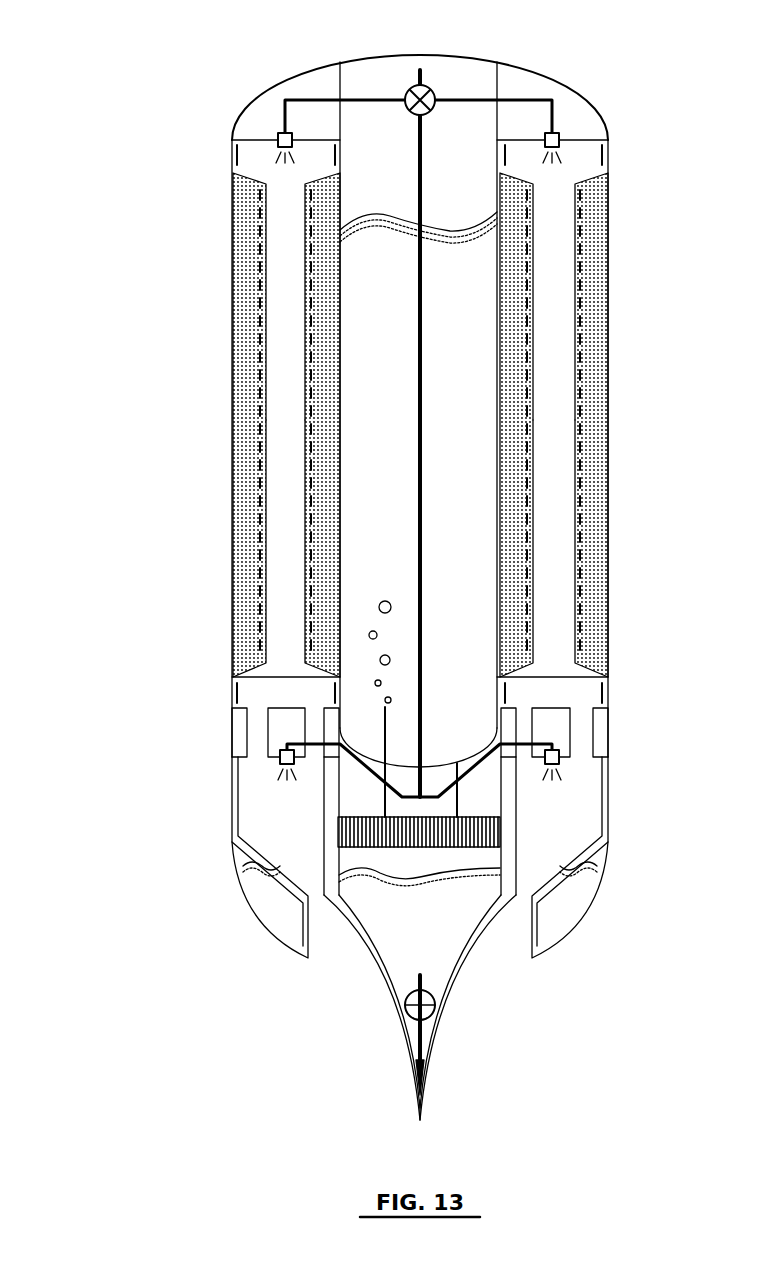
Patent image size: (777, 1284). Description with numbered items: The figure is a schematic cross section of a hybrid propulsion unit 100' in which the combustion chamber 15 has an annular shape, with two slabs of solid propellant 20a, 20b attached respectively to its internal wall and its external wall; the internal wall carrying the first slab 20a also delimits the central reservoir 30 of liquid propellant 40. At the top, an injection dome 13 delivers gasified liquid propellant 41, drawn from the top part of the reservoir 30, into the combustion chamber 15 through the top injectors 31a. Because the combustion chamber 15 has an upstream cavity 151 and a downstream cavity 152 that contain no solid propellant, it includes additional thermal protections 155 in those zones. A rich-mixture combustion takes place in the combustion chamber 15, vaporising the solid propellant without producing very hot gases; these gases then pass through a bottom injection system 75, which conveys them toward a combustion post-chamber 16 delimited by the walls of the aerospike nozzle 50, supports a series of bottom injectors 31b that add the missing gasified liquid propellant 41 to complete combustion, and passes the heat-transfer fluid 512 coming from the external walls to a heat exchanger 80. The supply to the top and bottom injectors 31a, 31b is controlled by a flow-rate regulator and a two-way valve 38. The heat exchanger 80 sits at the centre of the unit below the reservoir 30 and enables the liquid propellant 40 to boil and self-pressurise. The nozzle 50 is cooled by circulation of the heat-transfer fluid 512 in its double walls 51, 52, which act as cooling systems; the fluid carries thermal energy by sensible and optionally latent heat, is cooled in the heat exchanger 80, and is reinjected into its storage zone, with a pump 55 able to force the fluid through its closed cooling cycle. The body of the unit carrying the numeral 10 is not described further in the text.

The hybrid propulsion unit 100' is at (372, 566).
The reactor vessel 10 is at (228, 430).
The injection dome 13 is at (258, 120).
The combustion chamber 15 is at (282, 500).
The combustion post-chamber 16 is at (423, 788).
The first slab of solid propellant 20a is at (325, 290).
The second slab of solid propellant 20b is at (248, 275).
The central reservoir 30 is at (495, 268).
The top injectors 31a is at (560, 147).
The bottom injectors 31b is at (565, 765).
The two-way valve 38 is at (425, 92).
The liquid propellant 40 is at (418, 457).
The gasified liquid propellant 41 is at (475, 196).
The aerospike nozzle 50 is at (210, 763).
The double wall 51 is at (437, 1065).
The double wall 52 is at (533, 915).
The pump 55 is at (435, 1005).
The bottom injection system 75 is at (267, 737).
The heat exchanger 80 is at (500, 828).
The upstream cavity 151 is at (272, 137).
The downstream cavity 152 is at (263, 688).
The thermal protections 155 is at (237, 158).
The heat-transfer fluid 512 is at (438, 950).